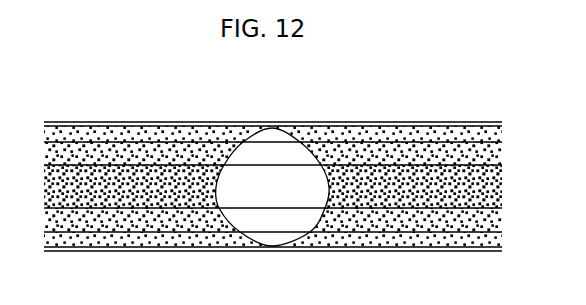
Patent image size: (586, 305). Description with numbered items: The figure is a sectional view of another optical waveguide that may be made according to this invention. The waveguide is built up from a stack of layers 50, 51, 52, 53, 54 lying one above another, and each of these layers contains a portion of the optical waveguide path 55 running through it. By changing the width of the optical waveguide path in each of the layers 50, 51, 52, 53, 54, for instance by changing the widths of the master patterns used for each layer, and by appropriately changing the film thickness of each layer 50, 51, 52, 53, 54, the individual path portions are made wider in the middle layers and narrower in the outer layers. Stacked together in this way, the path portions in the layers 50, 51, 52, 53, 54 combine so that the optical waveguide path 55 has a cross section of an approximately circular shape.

The layer 50 is at (190, 240).
The layer 51 is at (142, 222).
The layer 52 is at (113, 193).
The layer 53 is at (103, 157).
The layer 54 is at (155, 136).
The optical waveguide path 55 is at (279, 192).